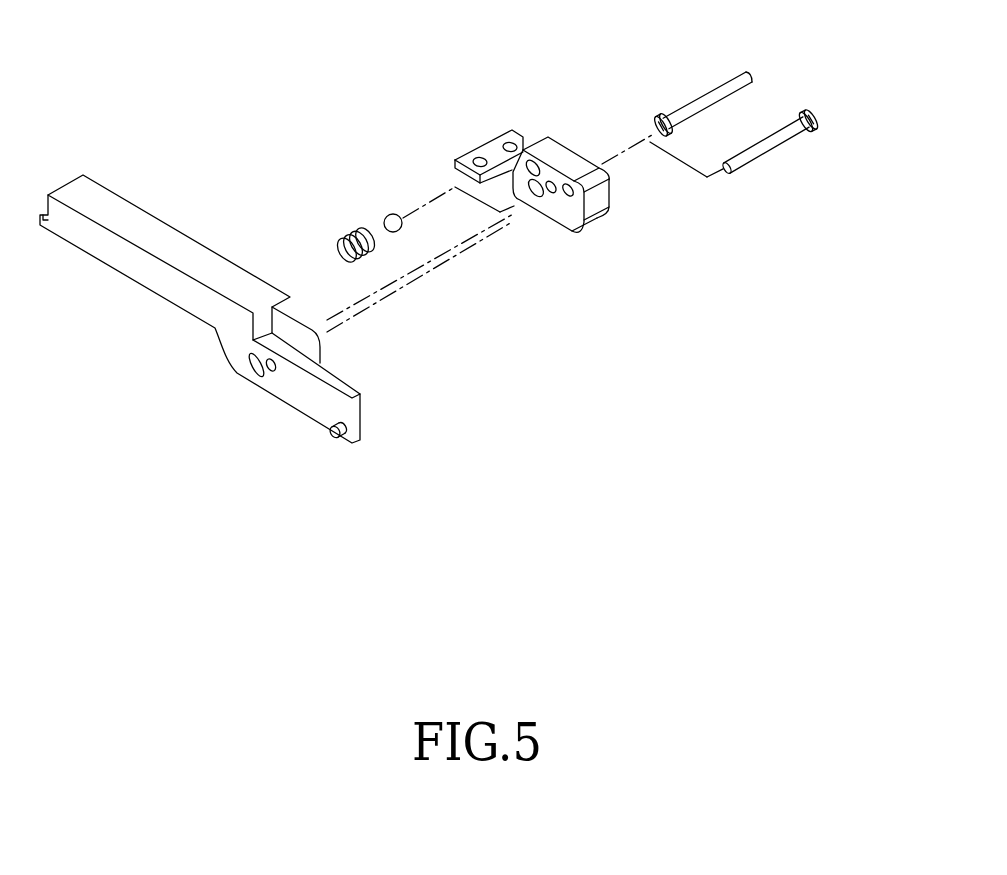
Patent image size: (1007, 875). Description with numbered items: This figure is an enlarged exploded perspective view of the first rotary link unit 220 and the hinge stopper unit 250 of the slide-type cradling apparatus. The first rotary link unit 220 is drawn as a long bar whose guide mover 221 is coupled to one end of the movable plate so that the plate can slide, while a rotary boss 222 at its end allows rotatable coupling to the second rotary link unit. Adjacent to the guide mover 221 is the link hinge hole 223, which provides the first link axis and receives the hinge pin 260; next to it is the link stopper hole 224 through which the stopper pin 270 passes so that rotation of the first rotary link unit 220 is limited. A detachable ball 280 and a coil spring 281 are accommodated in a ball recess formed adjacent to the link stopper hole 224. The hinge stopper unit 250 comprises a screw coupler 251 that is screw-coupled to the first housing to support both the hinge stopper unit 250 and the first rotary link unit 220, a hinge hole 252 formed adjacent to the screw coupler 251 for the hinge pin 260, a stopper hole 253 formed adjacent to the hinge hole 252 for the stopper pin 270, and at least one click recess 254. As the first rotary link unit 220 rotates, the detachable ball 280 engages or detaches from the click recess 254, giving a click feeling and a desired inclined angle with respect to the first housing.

The first rotary link unit 220 is at (338, 533).
The guide mover 221 is at (163, 277).
The rotary boss 222 is at (338, 437).
The link hinge hole 223 is at (275, 372).
The link stopper hole 224 is at (255, 370).
The hinge stopper unit 250 is at (712, 342).
The screw coupler 251 is at (495, 149).
The hinge hole 252 is at (605, 212).
The stopper hole 253 is at (548, 194).
The click recess 254 is at (533, 178).
The hinge pin 260 is at (771, 150).
The stopper pin 270 is at (697, 105).
The detachable ball 280 is at (386, 216).
The coil spring 281 is at (337, 229).